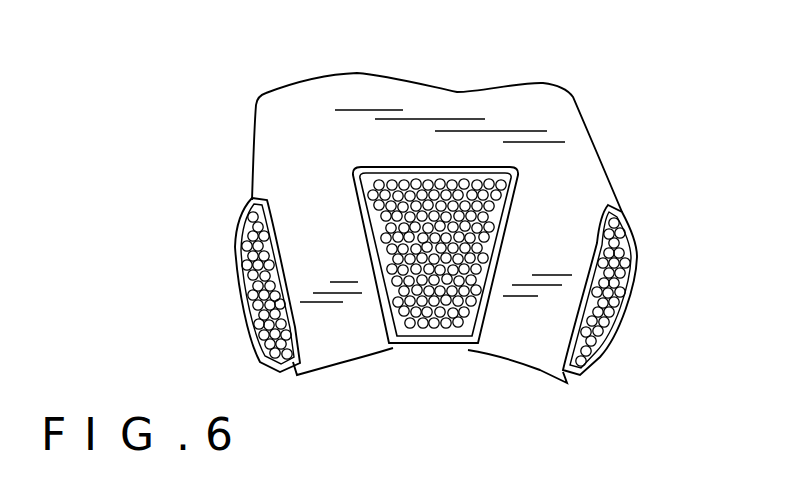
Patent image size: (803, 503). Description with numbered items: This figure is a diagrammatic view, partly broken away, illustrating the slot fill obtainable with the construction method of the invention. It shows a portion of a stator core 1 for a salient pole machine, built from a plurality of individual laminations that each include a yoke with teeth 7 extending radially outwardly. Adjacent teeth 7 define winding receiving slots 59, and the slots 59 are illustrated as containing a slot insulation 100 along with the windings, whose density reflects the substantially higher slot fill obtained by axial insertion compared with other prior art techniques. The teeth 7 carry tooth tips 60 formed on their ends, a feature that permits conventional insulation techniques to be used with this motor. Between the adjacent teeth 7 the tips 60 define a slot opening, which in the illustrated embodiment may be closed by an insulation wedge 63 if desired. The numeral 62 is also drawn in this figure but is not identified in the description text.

The stator core 1 is at (450, 108).
The slot insulation 100 is at (490, 172).
The slots 59 is at (513, 222).
The teeth 7 is at (535, 312).
The tooth tips 60 is at (395, 349).
The bottom neck 62 is at (432, 350).
The insulation wedge 63 is at (450, 343).